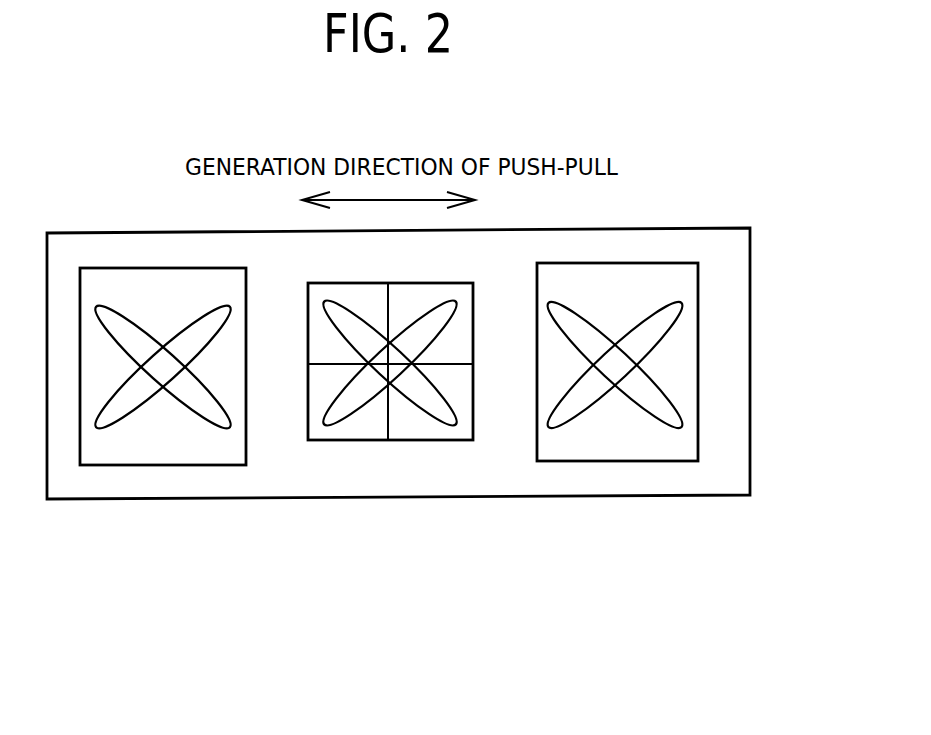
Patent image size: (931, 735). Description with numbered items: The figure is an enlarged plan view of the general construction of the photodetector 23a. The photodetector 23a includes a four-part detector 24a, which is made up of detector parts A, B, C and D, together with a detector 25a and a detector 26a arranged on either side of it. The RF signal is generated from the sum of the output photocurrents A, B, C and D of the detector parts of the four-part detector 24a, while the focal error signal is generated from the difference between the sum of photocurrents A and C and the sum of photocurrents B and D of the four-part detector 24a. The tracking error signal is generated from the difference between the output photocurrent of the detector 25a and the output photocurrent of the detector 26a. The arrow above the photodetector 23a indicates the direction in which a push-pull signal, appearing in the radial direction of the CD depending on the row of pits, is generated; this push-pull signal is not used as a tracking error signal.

The photodetector 23a is at (750, 370).
The 4-part detector 24a is at (380, 433).
The detector 25a is at (182, 448).
The detector 26a is at (618, 452).